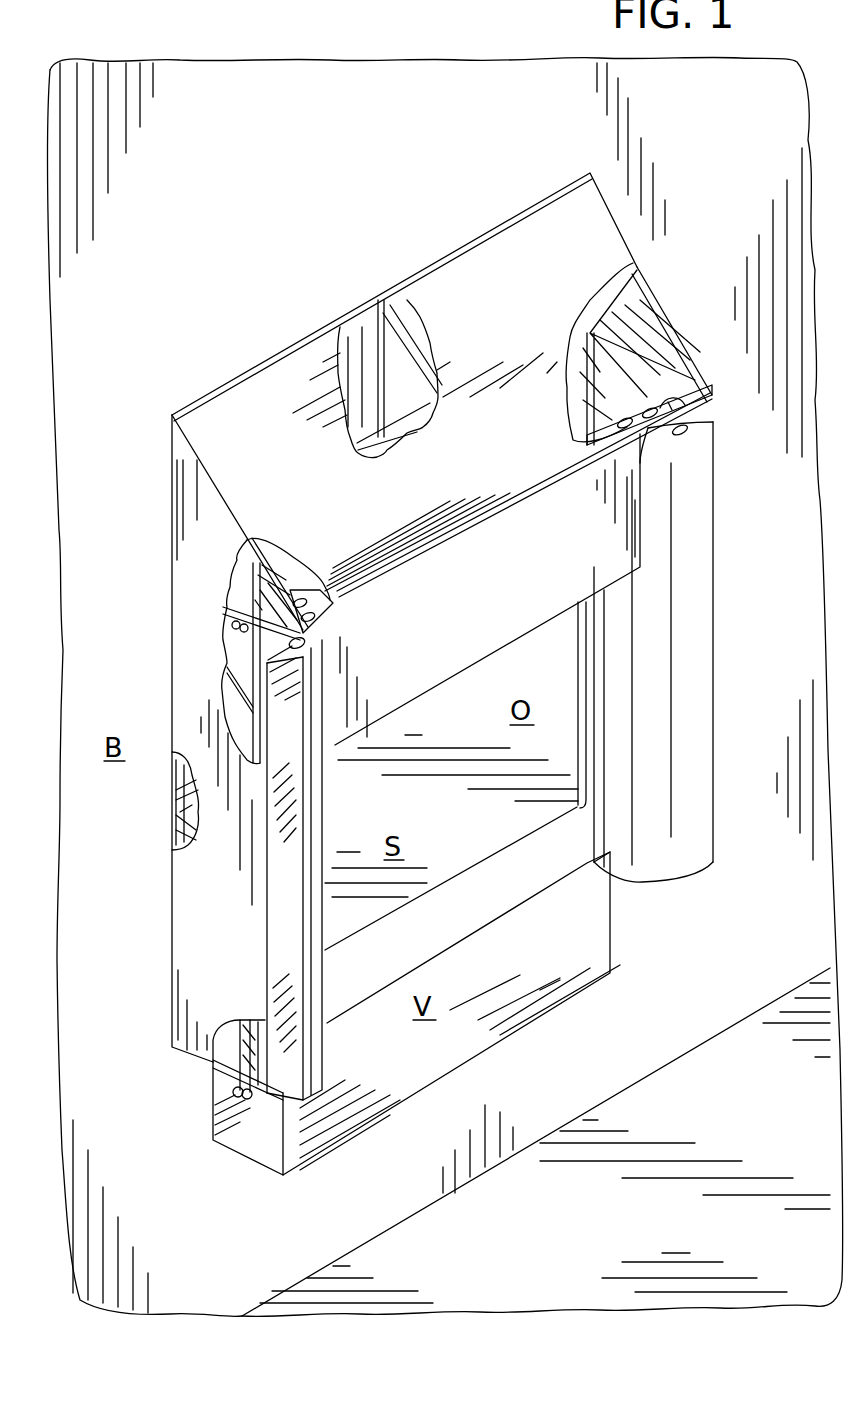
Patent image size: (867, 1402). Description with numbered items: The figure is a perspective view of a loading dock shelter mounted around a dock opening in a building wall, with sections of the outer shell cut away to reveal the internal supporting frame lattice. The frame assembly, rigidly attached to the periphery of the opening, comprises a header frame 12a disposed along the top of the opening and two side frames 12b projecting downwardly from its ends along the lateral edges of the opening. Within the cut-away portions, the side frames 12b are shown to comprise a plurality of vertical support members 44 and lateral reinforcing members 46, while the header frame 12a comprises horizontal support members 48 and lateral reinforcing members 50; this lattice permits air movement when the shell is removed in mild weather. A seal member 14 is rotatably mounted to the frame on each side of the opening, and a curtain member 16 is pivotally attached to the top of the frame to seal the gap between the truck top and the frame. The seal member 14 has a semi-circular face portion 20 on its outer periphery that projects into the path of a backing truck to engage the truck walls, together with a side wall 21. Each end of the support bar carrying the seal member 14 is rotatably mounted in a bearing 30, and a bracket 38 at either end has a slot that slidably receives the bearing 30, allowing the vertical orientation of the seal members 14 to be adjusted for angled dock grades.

The header frame 12a is at (660, 313).
The side frames 12b is at (172, 657).
The seal member 14 is at (710, 588).
The curtain member 16 is at (570, 569).
The face portion 20 is at (437, 870).
The side wall 21 is at (262, 867).
The bearing 30 is at (690, 385).
The bracket 38 is at (226, 628).
The vertical support members 44 is at (172, 790).
The lateral reinforcing members 46 is at (172, 823).
The horizontal support members 48 is at (383, 344).
The lateral reinforcing members 50 is at (410, 300).